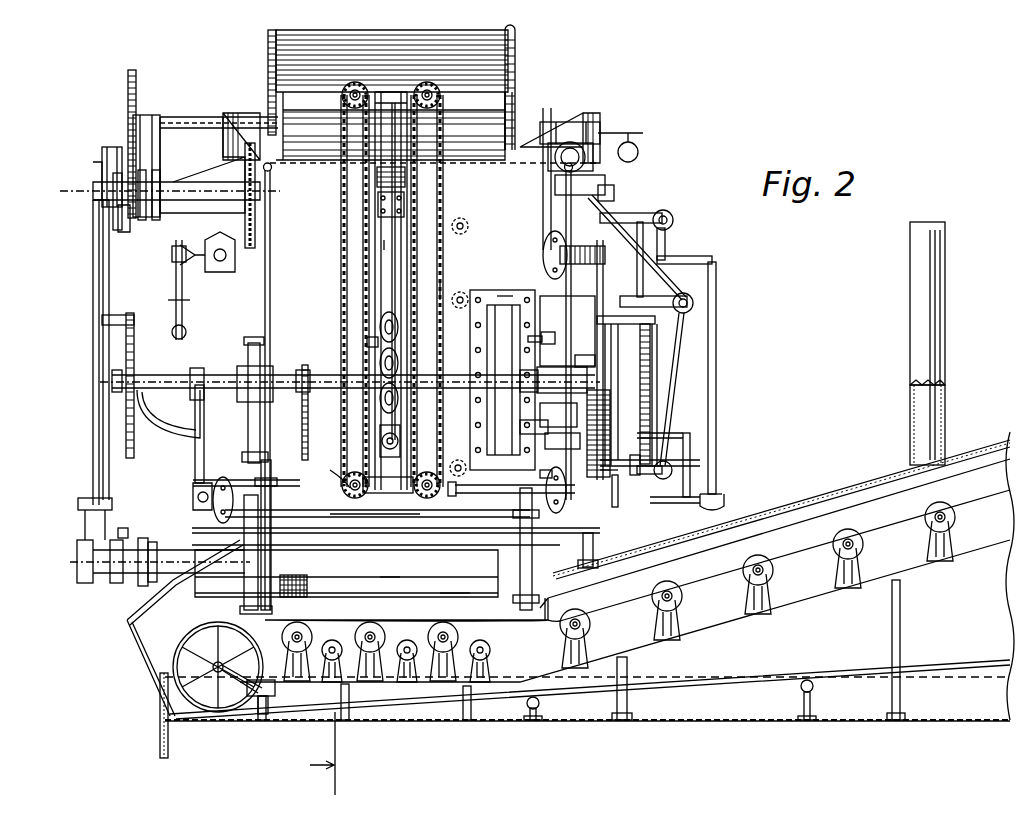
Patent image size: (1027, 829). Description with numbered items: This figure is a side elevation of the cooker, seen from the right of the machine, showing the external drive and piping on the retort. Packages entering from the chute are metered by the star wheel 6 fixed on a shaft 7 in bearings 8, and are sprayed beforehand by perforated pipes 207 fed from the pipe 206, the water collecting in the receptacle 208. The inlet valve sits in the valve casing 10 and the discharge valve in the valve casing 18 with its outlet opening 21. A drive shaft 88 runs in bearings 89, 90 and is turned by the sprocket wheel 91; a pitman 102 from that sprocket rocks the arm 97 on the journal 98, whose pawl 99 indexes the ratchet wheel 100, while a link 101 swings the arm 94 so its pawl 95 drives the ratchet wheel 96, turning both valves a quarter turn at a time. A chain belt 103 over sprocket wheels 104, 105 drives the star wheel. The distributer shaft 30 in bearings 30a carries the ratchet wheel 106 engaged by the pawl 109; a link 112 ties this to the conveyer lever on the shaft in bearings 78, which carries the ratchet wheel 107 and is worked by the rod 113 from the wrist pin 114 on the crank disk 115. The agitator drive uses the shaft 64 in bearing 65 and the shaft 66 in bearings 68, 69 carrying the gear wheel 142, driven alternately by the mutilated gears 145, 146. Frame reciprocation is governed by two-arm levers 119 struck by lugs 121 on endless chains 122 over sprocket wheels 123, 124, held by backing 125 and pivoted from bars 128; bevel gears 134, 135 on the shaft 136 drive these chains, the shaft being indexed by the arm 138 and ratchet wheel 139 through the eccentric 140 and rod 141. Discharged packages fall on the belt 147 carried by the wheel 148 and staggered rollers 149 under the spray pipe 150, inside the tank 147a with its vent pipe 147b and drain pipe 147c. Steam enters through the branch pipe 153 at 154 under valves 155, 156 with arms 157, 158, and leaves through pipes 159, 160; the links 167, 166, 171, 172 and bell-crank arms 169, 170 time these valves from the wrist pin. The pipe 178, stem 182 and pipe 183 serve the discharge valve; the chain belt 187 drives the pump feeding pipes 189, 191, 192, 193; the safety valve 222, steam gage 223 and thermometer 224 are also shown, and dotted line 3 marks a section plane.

The dotted line 3 is at (324, 757).
The star wheel 6 is at (494, 103).
The shaft 7 is at (200, 118).
The bearings 8 is at (150, 124).
The valve casing 10 is at (256, 243).
The valve casing 18 is at (398, 564).
The outlet opening 21 is at (453, 588).
The shaft 30 is at (537, 289).
The bearings 30a is at (212, 275).
The shaft 64 is at (552, 350).
The bearing 65 is at (562, 370).
The shaft 66 is at (548, 434).
The bearing 68 is at (545, 418).
The bearing 69 is at (572, 430).
The bearings 78 is at (218, 483).
The drive shaft 88 is at (285, 382).
The bearing 89 is at (166, 392).
The bearing 90 is at (572, 392).
The sprocket wheel 91 is at (124, 420).
The arm 94 is at (93, 193).
The pawl 95 is at (112, 150).
The ratchet wheel 96 is at (115, 230).
The arm 97 is at (78, 547).
The journal 98 is at (77, 573).
The pawl 99 is at (127, 536).
The ratchet wheel 100 is at (135, 588).
The link 101 is at (93, 291).
The pitman 102 is at (103, 450).
The chain belt 103 is at (160, 157).
The sprocket wheel 104 is at (126, 234).
The sprocket wheel 105 is at (156, 59).
The ratchet wheel 106 is at (605, 256).
The ratchet wheel 107 is at (614, 508).
The pawl 109 is at (584, 183).
The link 112 is at (600, 295).
The rod 113 is at (612, 370).
The wrist pin 114 is at (612, 318).
The crank disk 115 is at (680, 430).
The two-arm lever 119 is at (391, 291).
The lugs 121 is at (367, 343).
The endless chains 122 is at (440, 270).
The sprocket wheels 123 is at (424, 86).
The sprocket wheels 124 is at (343, 470).
The backing 125 is at (372, 314).
The bars 128 is at (384, 246).
The bevel gears 134 is at (350, 500).
The bevel gear wheels 135 is at (376, 498).
The shaft 136 is at (300, 487).
The arm 138 is at (266, 462).
The ratchet wheel 139 is at (193, 504).
The eccentric 140 is at (250, 345).
The rod 141 is at (255, 425).
The gear wheel 142 is at (548, 340).
The mutilated gear 145 is at (668, 297).
The mutilated gear 146 is at (673, 385).
The belt 147 is at (312, 714).
The casing or tank 147a is at (944, 435).
The vent pipe 147b is at (945, 243).
The pipe 147c is at (168, 748).
The wheel 148 is at (192, 646).
The rollers 149 is at (372, 656).
The perforated pipe 150 is at (783, 528).
The branch pipe 153 is at (718, 282).
The communication point 154 is at (458, 497).
The valve 155 is at (670, 213).
The valve 156 is at (718, 493).
The operating arm 157 is at (650, 212).
The operating arm 158 is at (690, 472).
The pipe 159 is at (660, 327).
The pipe 160 is at (615, 480).
The link 166 is at (650, 386).
The link 167 is at (668, 250).
The arm 169 is at (633, 472).
The arm 170 is at (614, 405).
The link 171 is at (655, 355).
The link 172 is at (692, 440).
The pipe 178 is at (602, 196).
The tubular stem 182 is at (570, 590).
The pipe 183 is at (622, 222).
The chain belt 187 is at (310, 395).
The pipe 189 is at (240, 611).
The pipe 191 is at (272, 265).
The pipe 192 is at (513, 280).
The pipe 193 is at (520, 528).
The pipe 206 is at (515, 42).
The perforated pipes 207 is at (275, 52).
The receptacle 208 is at (560, 118).
The safety valve 222 is at (586, 146).
The steam gage 223 is at (222, 158).
The thermometer 224 is at (175, 290).